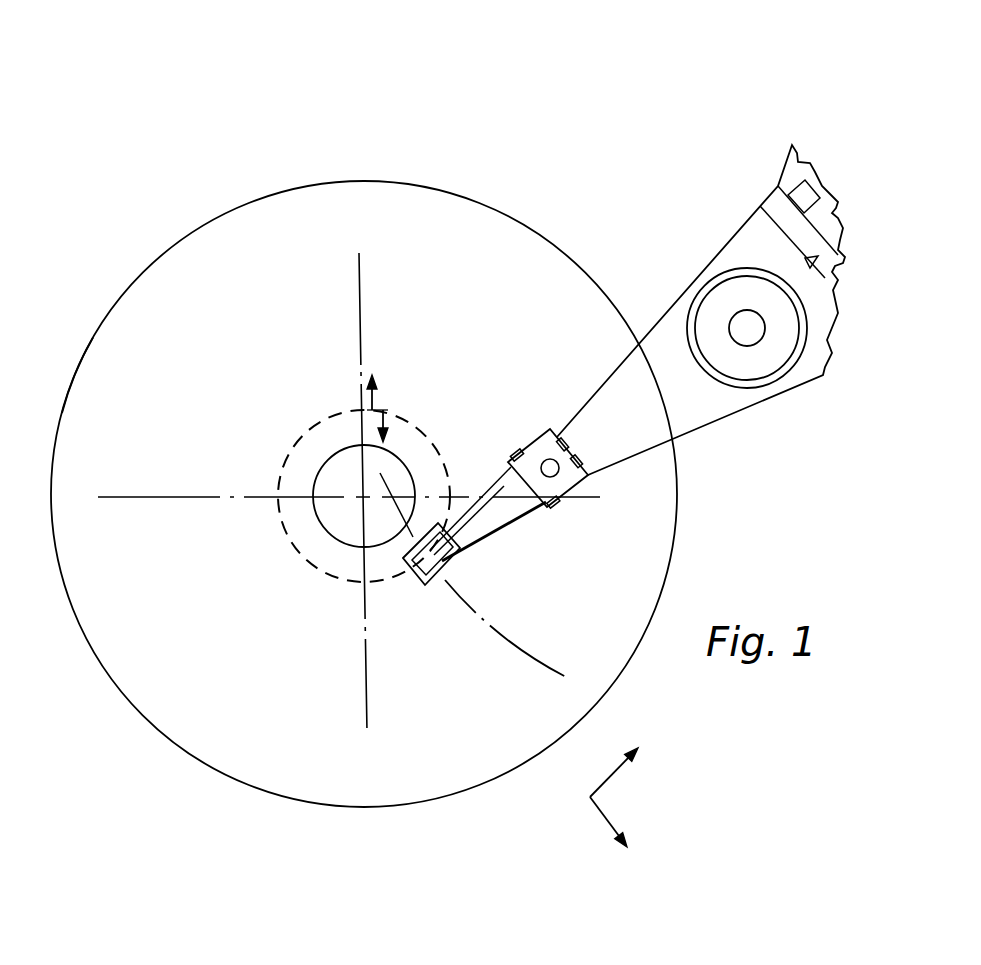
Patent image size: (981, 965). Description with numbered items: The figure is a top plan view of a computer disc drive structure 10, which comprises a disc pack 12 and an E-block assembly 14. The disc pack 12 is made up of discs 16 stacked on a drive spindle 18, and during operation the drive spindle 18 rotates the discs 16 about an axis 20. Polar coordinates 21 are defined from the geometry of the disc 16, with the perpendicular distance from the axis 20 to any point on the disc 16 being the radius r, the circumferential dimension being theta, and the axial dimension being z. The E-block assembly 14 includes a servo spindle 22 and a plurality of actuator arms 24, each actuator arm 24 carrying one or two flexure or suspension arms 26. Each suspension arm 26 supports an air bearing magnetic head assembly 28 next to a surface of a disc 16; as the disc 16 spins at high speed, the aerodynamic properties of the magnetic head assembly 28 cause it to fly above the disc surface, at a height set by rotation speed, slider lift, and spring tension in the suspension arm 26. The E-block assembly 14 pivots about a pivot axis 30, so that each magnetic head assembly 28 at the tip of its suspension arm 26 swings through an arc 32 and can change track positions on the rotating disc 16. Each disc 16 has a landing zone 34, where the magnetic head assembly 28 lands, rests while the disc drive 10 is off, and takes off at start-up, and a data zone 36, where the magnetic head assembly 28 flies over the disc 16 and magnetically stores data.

The disc drive structure 10 is at (492, 153).
The disc pack 12 is at (130, 285).
The E-block assembly 14 is at (642, 387).
The disc 16 is at (102, 380).
The drive spindle 18 is at (330, 480).
The axis 20 is at (362, 498).
The polar coordinates 21 is at (600, 810).
The servo spindle 22 is at (743, 370).
The actuator arm 24 is at (680, 418).
The suspension arm 26 is at (487, 517).
The magnetic head assembly 28 is at (422, 582).
The pivot axis 30 is at (748, 330).
The arc 32 is at (512, 643).
The landing zone 34 is at (395, 431).
The data zone 36 is at (389, 390).